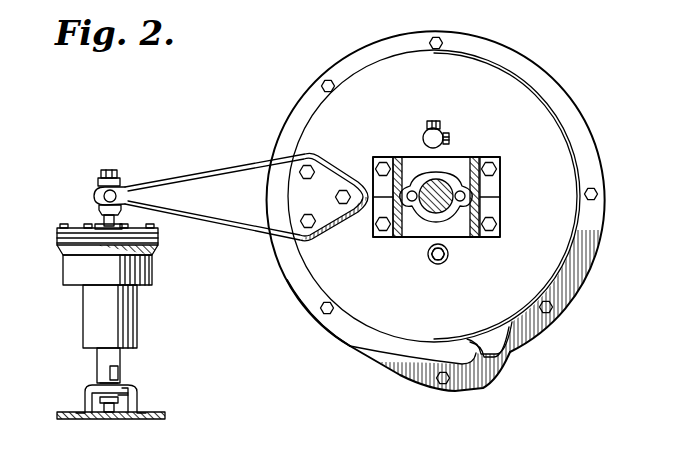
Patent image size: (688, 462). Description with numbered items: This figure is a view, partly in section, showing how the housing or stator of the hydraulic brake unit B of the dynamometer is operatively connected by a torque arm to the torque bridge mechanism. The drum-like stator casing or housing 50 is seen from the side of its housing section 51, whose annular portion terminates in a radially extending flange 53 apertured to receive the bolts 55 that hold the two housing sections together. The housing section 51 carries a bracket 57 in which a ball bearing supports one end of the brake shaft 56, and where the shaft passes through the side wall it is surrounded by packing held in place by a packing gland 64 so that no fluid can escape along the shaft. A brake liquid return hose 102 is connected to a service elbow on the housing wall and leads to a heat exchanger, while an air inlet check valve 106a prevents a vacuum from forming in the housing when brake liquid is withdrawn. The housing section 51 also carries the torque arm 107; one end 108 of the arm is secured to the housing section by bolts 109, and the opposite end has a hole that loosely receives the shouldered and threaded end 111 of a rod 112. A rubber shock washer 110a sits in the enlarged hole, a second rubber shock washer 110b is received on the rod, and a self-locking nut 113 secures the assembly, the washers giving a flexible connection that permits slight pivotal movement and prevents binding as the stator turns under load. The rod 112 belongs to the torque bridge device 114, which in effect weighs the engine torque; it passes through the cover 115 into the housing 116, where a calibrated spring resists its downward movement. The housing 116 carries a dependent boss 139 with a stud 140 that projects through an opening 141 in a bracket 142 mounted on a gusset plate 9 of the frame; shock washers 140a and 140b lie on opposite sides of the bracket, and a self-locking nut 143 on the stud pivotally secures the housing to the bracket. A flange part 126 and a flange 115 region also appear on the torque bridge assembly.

The brake or power absorption unit B is at (596, 137).
The stator casing or housing 50 is at (601, 249).
The housing section 51 is at (376, 326).
The radially extending flange 53 is at (298, 284).
The bolts 55 is at (322, 86).
The bracket 57 is at (500, 186).
The brake shaft 56 is at (447, 206).
The packing gland 64 is at (422, 216).
The brake liquid return hose 102 is at (445, 264).
The air inlet check valve 106a is at (437, 122).
The torque arm 107 is at (215, 172).
The end of torque arm 108 is at (321, 165).
The bolts 109 is at (334, 197).
The shouldered and threaded end 111 is at (110, 170).
The self-locking nut 113 is at (119, 178).
The rubber shock washer 110b is at (98, 190).
The rubber shock washer 110a is at (99, 208).
The rod 112 is at (104, 222).
The flange tabs 126 is at (62, 232).
The cover 115 is at (152, 236).
The torque bridge device 114 is at (64, 279).
The housing 116 is at (132, 322).
The dependent boss 139 is at (122, 355).
The stud 140 is at (120, 373).
The opening 141 is at (96, 382).
The bracket 142 is at (86, 391).
The shock washer 140a is at (126, 388).
The gusset plate 9 is at (58, 417).
The self-locking nut 143 is at (106, 412).
The shock washer 140b is at (120, 413).